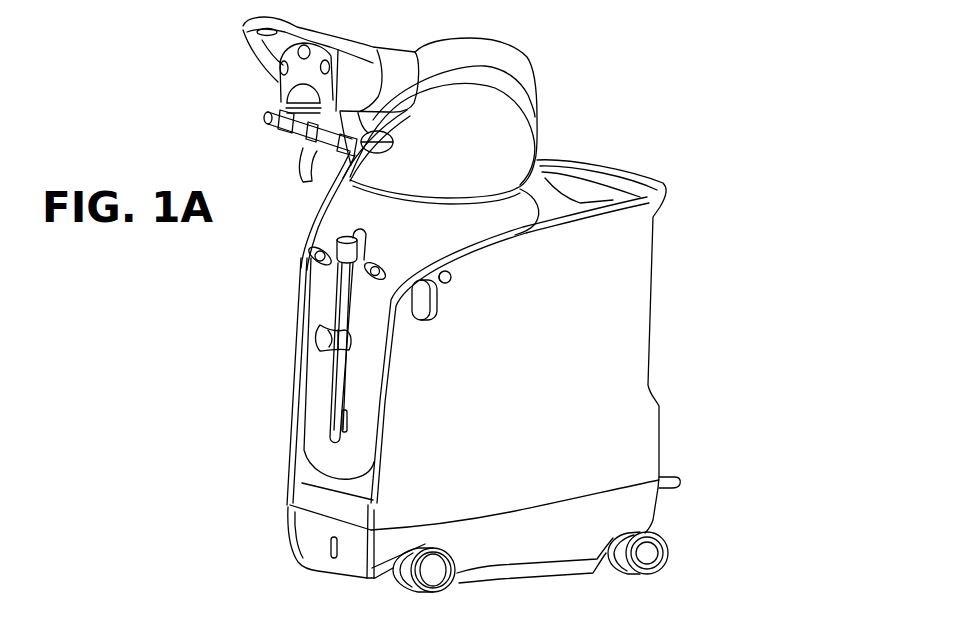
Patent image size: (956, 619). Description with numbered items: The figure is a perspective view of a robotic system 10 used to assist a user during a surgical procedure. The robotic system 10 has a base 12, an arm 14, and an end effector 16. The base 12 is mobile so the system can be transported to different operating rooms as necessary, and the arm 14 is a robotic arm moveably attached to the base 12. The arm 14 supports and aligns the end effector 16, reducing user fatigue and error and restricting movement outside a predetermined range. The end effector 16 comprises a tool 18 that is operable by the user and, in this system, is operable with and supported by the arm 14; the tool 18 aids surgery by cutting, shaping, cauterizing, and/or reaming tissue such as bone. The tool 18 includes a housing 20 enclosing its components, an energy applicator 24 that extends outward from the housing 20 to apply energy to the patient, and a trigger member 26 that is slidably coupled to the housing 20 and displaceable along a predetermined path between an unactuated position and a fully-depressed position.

The robotic system 10 is at (743, 174).
The base 12 is at (298, 372).
The arm 14 is at (380, 44).
The end effector 16 is at (270, 105).
The tool 18 is at (287, 134).
The housing 20 is at (303, 137).
The energy applicator 24 is at (350, 168).
The trigger member 26 is at (317, 193).